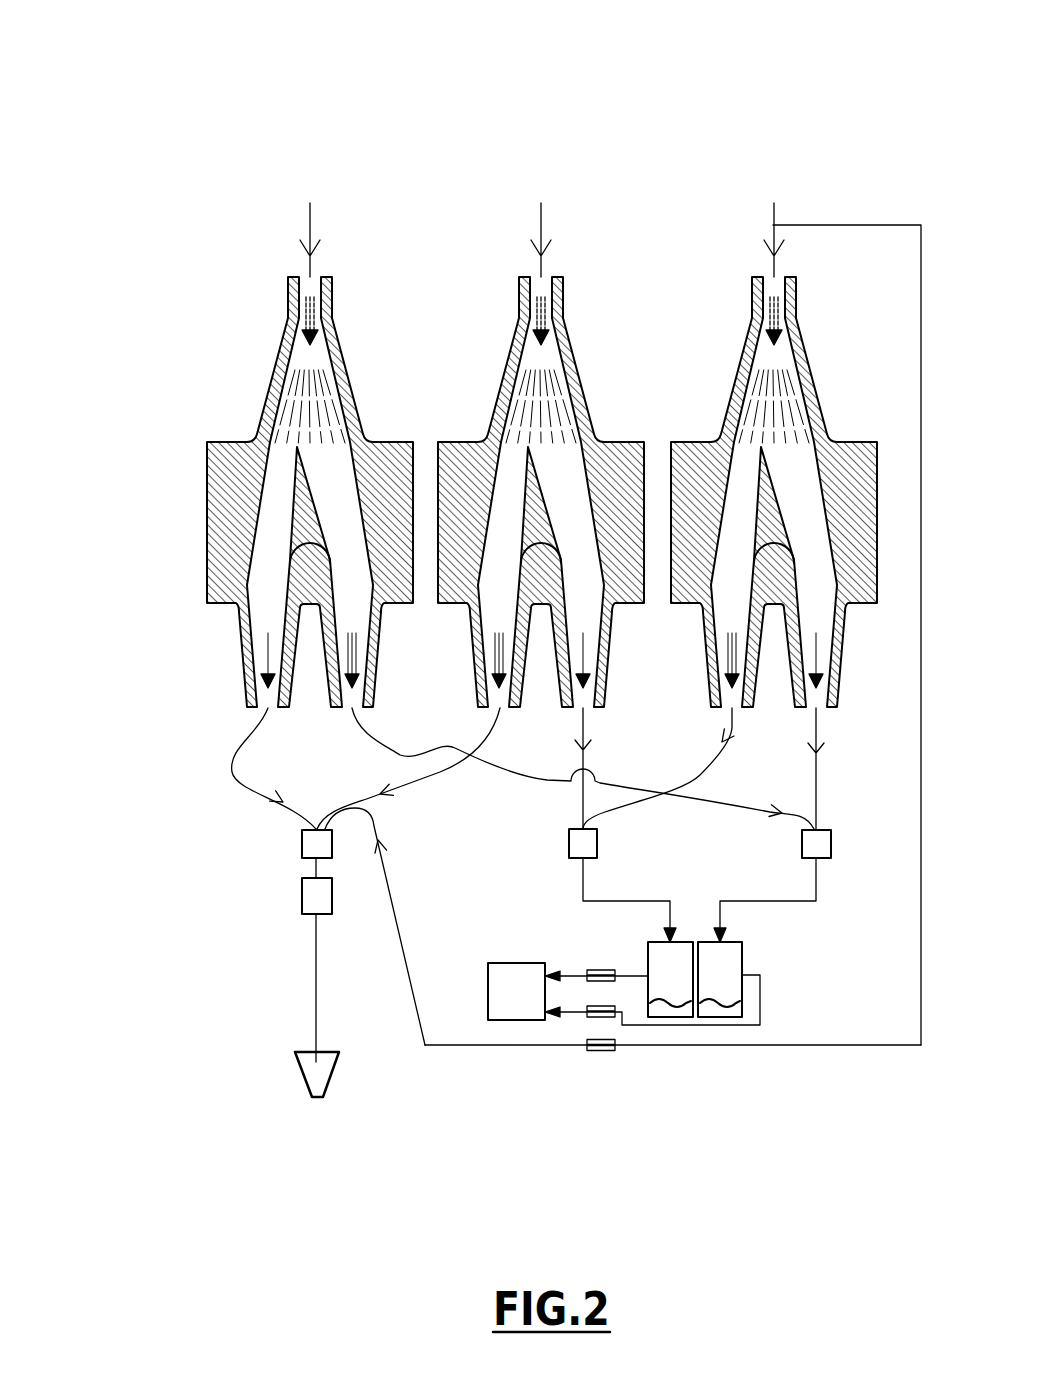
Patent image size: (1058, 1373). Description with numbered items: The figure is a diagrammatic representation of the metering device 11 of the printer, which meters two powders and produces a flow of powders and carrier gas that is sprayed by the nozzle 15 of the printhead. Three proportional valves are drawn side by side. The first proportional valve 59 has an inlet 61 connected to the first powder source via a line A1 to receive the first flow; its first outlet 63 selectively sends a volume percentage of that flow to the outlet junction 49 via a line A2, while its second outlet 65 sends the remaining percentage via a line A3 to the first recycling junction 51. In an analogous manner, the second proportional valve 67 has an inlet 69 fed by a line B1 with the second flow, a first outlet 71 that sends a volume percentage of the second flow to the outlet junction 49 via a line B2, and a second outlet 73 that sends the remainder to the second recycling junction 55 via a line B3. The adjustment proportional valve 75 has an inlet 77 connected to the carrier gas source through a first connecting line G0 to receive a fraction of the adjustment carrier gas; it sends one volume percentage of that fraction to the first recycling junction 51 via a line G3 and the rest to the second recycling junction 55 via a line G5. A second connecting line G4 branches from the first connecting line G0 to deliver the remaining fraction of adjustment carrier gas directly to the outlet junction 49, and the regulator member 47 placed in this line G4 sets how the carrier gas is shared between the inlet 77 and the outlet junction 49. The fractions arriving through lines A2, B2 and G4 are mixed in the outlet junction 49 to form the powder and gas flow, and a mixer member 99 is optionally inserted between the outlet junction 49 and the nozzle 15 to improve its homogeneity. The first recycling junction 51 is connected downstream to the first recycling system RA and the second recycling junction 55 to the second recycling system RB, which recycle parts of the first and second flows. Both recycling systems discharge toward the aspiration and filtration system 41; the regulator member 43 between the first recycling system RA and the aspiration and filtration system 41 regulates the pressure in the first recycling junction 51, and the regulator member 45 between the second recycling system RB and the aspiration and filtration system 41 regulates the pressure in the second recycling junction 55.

The metering device 11 is at (140, 100).
The first proportional valve 59 is at (200, 396).
The inlet of first proportional valve 61 is at (300, 277).
The first outlet of first proportional valve 63 is at (272, 712).
The second outlet of first proportional valve 65 is at (348, 712).
The second proportional valve 67 is at (596, 400).
The inlet of second proportional valve 69 is at (530, 277).
The first outlet of second proportional valve 71 is at (508, 710).
The second outlet of second proportional valve 73 is at (580, 713).
The adjustment proportional valve 75 is at (827, 400).
The inlet of adjustment proportional valve 77 is at (763, 277).
The outlet junction 49 is at (302, 845).
The mixer member 99 is at (302, 893).
The nozzle 15 is at (300, 1072).
The second recycling junction 55 is at (569, 845).
The first recycling junction 51 is at (802, 845).
The aspiration and filtration system 41 is at (516, 1021).
The regulator member 43 is at (598, 1018).
The regulator member 45 is at (600, 968).
The regulator member 47 is at (605, 1051).
The second recycling system RB is at (672, 1018).
The first recycling system RA is at (720, 1018).
The line A1 is at (310, 218).
The line A2 is at (257, 722).
The line A3 is at (367, 717).
The line B1 is at (541, 218).
The line B2 is at (475, 740).
The line B3 is at (585, 727).
The first connecting line G0 is at (774, 232).
The line G3 is at (818, 718).
The second connecting line G4 is at (873, 225).
The line G5 is at (730, 728).